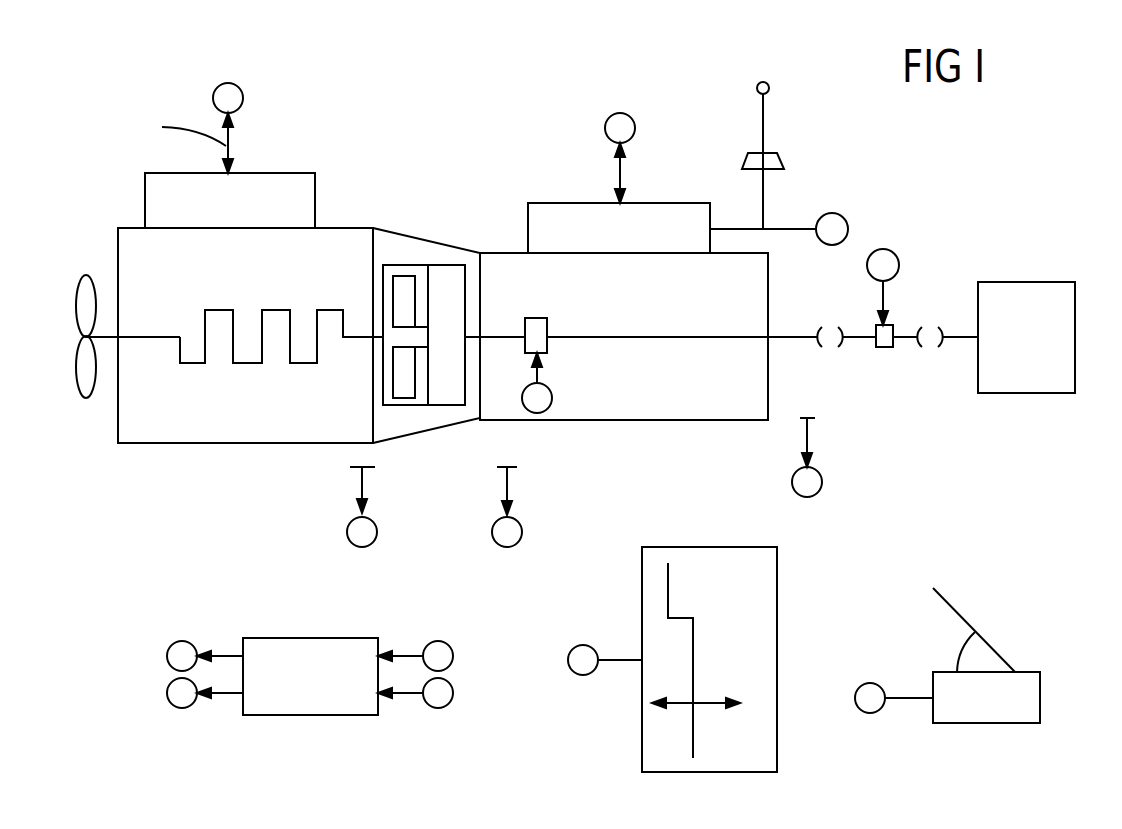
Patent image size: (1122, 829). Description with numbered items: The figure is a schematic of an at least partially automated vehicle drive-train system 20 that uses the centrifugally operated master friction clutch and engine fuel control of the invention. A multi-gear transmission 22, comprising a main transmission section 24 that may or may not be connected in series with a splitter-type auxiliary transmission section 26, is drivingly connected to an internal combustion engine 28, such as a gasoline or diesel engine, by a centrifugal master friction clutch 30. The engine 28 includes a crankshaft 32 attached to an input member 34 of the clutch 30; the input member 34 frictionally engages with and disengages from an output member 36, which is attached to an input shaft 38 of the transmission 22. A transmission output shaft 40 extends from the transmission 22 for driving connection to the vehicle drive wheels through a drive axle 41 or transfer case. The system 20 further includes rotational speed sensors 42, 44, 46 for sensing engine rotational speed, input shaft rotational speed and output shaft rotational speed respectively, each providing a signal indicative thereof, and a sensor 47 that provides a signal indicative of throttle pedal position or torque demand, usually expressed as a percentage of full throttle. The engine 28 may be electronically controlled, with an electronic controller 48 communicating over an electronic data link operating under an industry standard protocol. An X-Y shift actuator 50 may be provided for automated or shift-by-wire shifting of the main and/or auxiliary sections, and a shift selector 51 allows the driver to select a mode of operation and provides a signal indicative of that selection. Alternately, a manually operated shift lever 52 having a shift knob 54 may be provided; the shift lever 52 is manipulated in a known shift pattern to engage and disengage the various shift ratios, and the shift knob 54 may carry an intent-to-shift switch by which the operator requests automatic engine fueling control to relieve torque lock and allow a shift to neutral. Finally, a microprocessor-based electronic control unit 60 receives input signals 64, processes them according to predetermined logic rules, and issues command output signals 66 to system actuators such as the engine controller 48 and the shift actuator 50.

The vehicle drive-train system 20 is at (330, 84).
The multi-gear transmission 22 is at (664, 444).
The main transmission section 24 is at (538, 432).
The splitter-type auxiliary transmission section 26 is at (717, 412).
The internal combustion engine 28 is at (172, 455).
The centrifugal master friction clutch 30 is at (458, 205).
The crankshaft 32 is at (205, 318).
The input member 34 is at (418, 268).
The output member 36 is at (443, 397).
The input shaft 38 is at (557, 337).
The transmission output shaft 40 is at (796, 337).
The drive axle 41 is at (1060, 290).
The engine speed sensor 42 is at (358, 485).
The input shaft speed sensor 44 is at (510, 485).
The output shaft speed sensor 46 is at (811, 430).
The throttle sensor 47 is at (963, 715).
The electronic controller 48 is at (266, 185).
The X-Y shift actuator 50 is at (661, 218).
The shift selector 51 is at (712, 767).
The shift lever 52 is at (765, 135).
The shift knob 54 is at (770, 88).
The electronic control unit 60 is at (293, 708).
The input signals 64 is at (414, 710).
The command output signals 66 is at (224, 710).